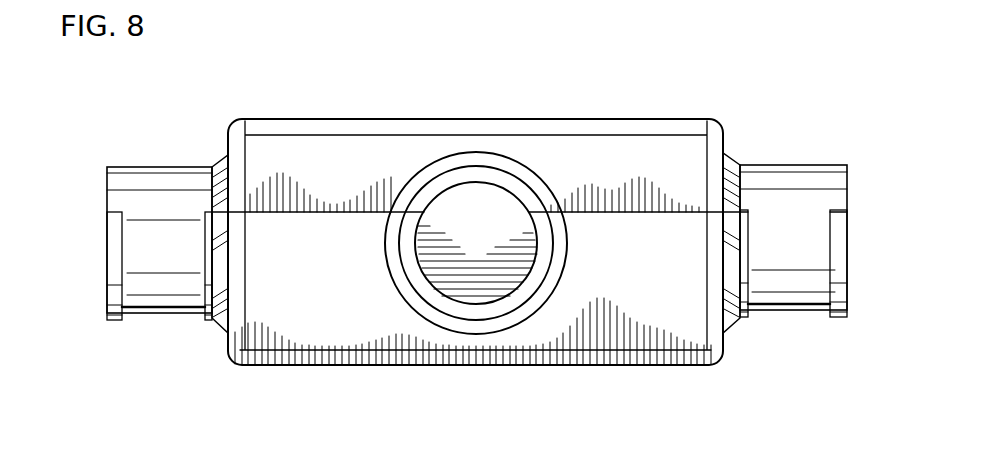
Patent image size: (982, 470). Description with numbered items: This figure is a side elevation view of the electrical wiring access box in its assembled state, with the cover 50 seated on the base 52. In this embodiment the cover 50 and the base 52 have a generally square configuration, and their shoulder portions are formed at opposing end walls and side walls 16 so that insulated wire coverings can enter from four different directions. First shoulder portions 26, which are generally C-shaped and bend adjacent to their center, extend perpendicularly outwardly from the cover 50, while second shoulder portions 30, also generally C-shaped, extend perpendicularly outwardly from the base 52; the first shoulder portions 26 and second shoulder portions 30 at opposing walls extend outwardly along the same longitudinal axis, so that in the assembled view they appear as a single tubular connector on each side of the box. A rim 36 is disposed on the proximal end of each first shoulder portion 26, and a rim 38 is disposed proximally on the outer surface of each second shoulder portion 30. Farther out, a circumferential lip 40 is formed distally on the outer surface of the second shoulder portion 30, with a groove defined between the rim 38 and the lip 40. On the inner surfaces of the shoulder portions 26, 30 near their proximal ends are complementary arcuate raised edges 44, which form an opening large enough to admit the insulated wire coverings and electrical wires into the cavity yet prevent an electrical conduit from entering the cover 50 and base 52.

The side walls 16 is at (651, 268).
The first shoulder portions 26 is at (115, 181).
The second shoulder portions 30 is at (166, 309).
The rim 36 is at (212, 163).
The rim 38 is at (219, 326).
The circumferential lip 40 is at (114, 322).
The arcuate raised edges 44 is at (460, 300).
The cover 50 is at (327, 79).
The base 52 is at (381, 392).